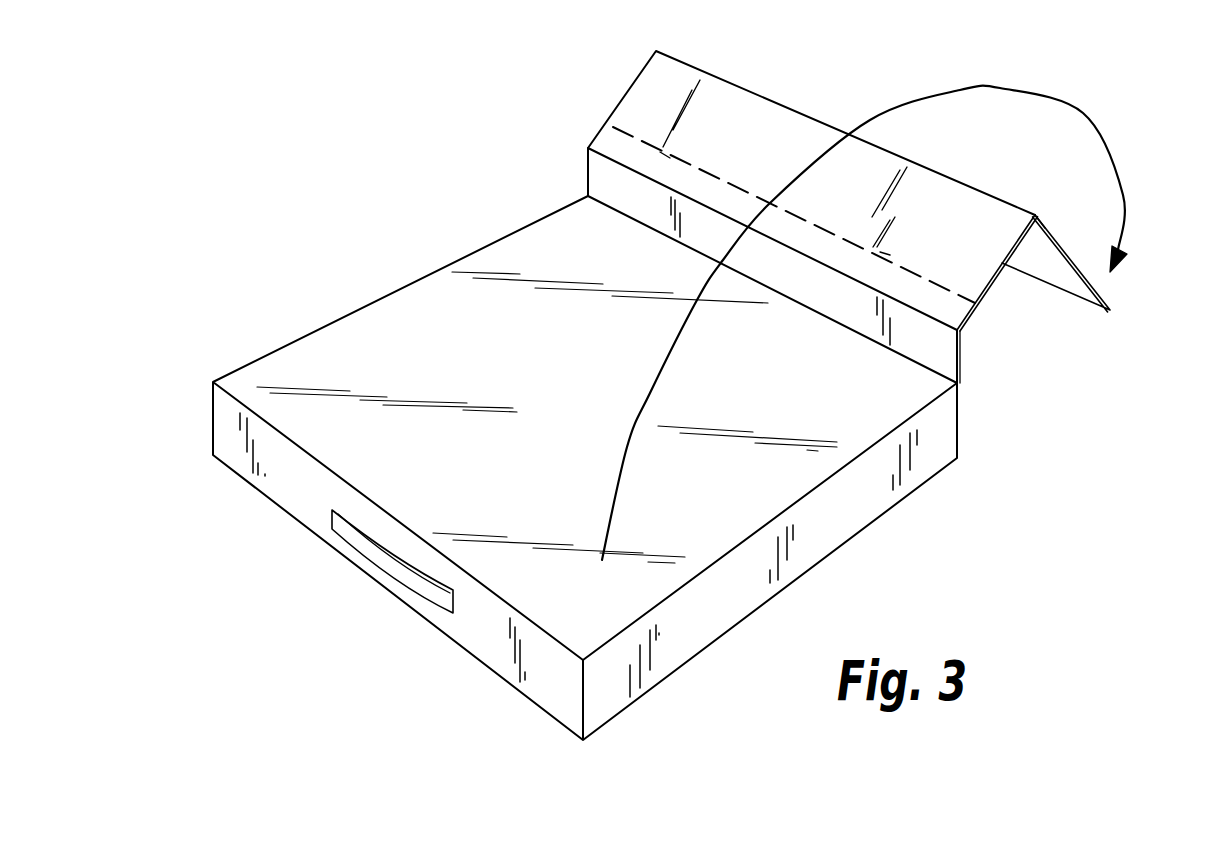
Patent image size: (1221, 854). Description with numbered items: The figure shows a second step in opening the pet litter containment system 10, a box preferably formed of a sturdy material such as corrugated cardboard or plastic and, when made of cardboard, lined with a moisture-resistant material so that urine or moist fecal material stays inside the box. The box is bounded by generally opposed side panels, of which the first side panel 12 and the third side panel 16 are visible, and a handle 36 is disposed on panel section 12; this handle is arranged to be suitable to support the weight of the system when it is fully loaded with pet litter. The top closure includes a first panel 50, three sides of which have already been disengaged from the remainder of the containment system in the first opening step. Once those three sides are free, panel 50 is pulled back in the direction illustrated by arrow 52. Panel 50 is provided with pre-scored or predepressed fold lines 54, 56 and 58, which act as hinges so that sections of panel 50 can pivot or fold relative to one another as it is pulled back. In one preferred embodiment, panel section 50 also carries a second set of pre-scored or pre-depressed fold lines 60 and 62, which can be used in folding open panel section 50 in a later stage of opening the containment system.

The pet litter containment system 10 is at (363, 252).
The first side panel 12 is at (517, 663).
The third side panel 16 is at (817, 535).
The handle 36 is at (383, 568).
The first panel 50 is at (990, 287).
The arrow 52 is at (1127, 205).
The fold line 54 is at (615, 208).
The fold line 56 is at (620, 163).
The fold line 58 is at (950, 180).
The fold line 60 is at (971, 296).
The fold line 62 is at (1040, 252).